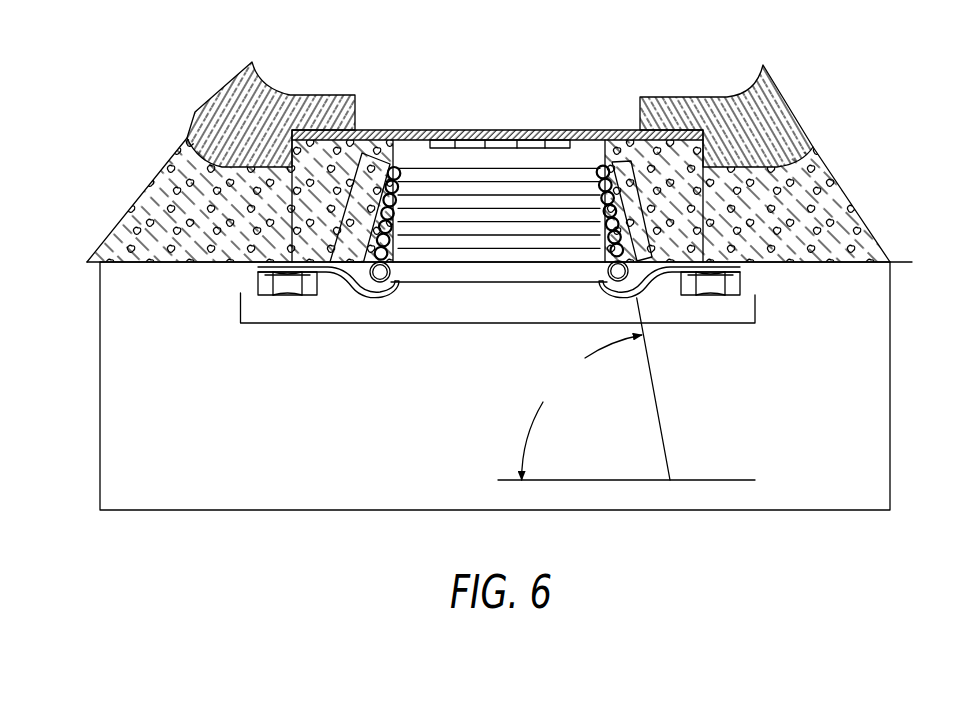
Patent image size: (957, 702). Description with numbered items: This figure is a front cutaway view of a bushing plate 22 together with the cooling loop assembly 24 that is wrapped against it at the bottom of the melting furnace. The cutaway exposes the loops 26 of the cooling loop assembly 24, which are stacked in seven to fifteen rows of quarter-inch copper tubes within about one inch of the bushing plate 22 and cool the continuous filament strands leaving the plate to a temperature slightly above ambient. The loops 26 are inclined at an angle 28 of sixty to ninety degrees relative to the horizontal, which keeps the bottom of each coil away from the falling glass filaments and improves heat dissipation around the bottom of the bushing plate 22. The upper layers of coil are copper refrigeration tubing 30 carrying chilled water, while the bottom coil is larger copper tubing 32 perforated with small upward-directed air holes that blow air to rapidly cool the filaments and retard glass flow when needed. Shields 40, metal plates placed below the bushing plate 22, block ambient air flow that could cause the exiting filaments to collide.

The bushing plate 22 is at (520, 130).
The cooling loop assembly 24 is at (498, 323).
The loops 26 is at (340, 207).
The angle 28 is at (626, 389).
The copper refrigeration tubing 30 is at (647, 208).
The copper tubing 32 is at (370, 280).
The shields 40 is at (891, 309).